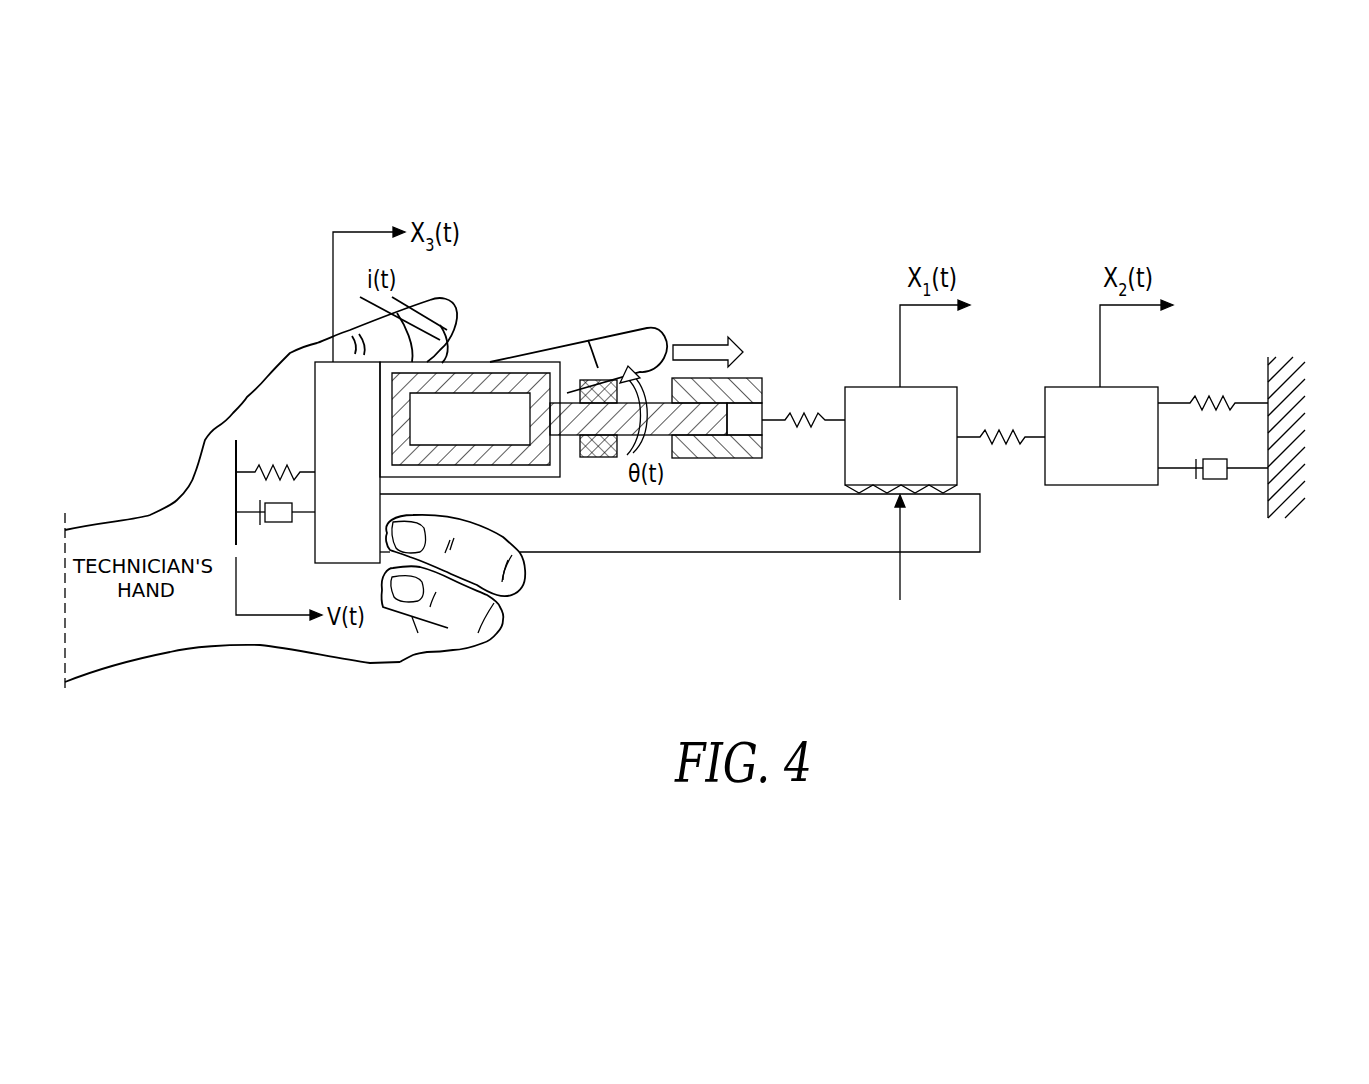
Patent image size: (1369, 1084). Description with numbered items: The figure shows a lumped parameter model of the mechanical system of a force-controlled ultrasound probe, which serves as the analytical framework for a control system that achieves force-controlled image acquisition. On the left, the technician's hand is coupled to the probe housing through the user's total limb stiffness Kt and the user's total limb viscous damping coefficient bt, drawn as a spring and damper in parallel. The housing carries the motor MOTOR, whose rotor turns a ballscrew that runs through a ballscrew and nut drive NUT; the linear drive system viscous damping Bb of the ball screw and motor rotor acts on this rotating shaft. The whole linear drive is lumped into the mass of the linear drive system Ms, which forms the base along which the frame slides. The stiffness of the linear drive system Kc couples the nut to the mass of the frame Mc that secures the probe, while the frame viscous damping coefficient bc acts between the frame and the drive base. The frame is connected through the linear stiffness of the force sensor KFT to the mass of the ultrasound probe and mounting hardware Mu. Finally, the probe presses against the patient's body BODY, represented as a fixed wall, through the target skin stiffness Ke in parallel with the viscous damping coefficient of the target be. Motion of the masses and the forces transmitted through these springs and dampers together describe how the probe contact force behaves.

The user's total limb stiffness Kt is at (275, 453).
The user's total limb viscous damping coefficient bt is at (275, 529).
The motor MOTOR is at (470, 419).
The linear drive system viscous damping Bb is at (598, 470).
The ballscrew and nut drive NUT is at (717, 470).
The mass of the linear drive system Ms is at (680, 523).
The stiffness of the linear drive system Kc is at (803, 401).
The mass of a frame that secures the probe Mc is at (901, 440).
The linear stiffness of a force sensor KFT is at (1001, 415).
The mass of ultrasound probe and mounting hardware Mu is at (1100, 600).
The target skin stiffness Ke is at (1213, 385).
The viscous damping coefficient of the target be is at (1213, 487).
The frame viscous damping coefficient bc is at (897, 562).
The patient's body BODY is at (1285, 532).